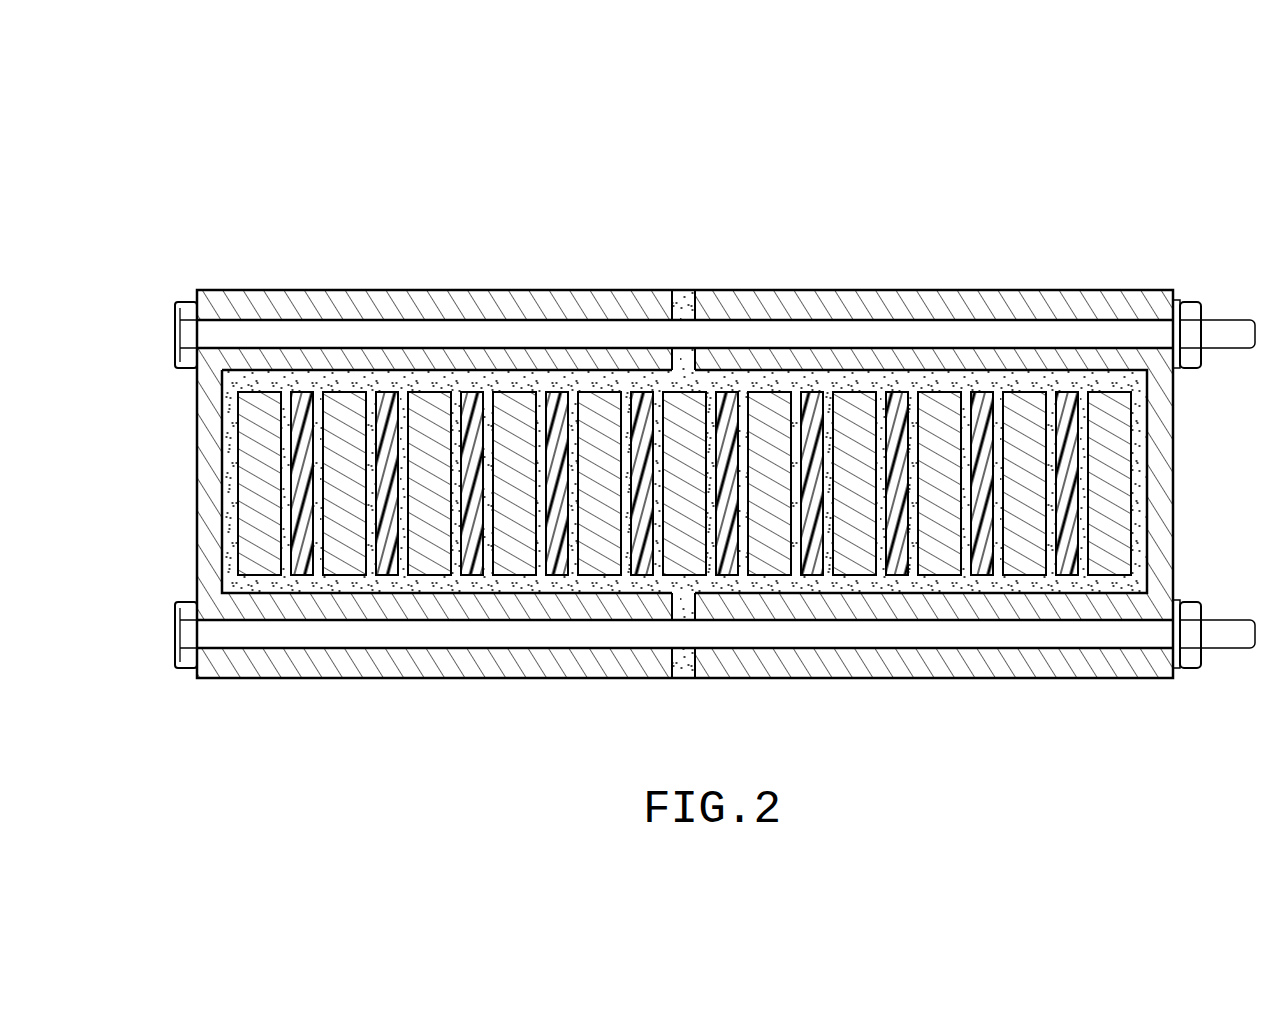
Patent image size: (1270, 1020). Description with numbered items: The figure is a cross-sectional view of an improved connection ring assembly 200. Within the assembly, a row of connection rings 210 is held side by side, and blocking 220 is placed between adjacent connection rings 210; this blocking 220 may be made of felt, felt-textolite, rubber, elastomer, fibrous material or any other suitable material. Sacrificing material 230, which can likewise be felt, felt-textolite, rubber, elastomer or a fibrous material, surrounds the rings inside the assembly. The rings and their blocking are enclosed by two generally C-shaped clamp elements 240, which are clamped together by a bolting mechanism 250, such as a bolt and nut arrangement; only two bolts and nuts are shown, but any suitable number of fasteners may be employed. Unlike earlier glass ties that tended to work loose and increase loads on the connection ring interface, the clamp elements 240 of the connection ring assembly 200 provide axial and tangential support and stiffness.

The connection ring assembly 200 is at (973, 128).
The connection rings 210 is at (1103, 565).
The blocking 220 is at (978, 405).
The sacrificing material 230 is at (453, 563).
The clamp elements 240 is at (1084, 292).
The bolting mechanism 250 is at (360, 326).